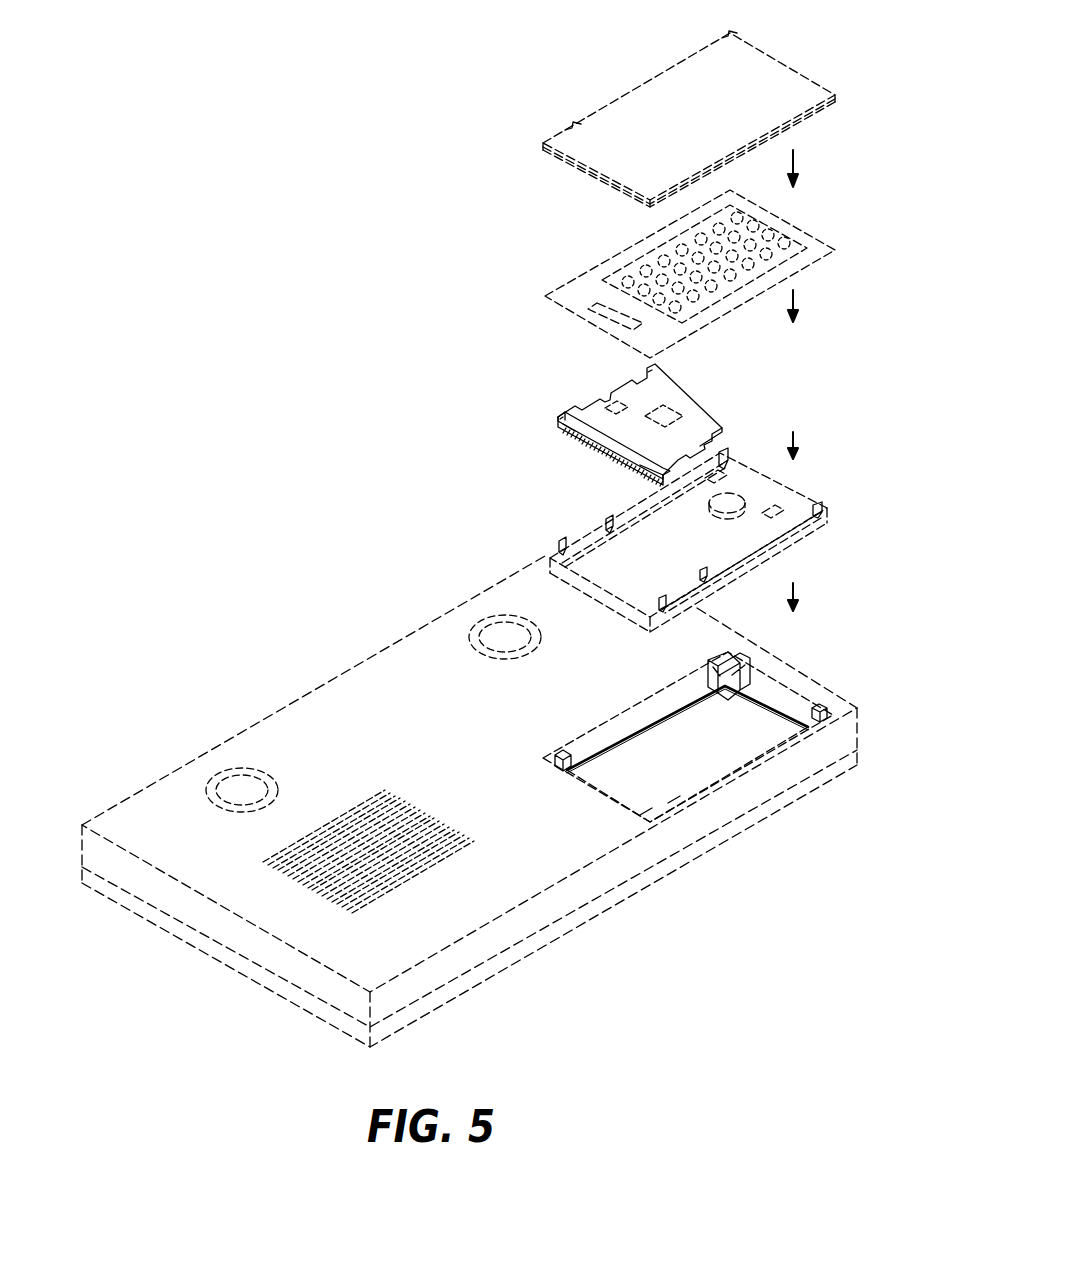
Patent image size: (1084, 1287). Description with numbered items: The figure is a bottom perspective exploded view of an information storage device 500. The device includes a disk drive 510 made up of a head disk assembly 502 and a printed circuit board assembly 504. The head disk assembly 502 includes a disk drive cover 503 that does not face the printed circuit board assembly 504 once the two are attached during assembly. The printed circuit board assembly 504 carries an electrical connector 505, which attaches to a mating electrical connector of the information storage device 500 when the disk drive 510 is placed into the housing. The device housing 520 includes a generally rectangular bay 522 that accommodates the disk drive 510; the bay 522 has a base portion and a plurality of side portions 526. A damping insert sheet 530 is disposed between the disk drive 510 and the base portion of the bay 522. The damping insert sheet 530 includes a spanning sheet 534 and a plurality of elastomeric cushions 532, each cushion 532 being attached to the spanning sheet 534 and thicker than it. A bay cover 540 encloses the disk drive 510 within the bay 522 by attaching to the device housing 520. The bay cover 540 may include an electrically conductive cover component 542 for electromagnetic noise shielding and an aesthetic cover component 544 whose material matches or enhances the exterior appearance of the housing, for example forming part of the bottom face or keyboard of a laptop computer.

The information storage device 500 is at (208, 157).
The bay cover 540 is at (401, 100).
The aesthetic cover component 544 is at (586, 118).
The electrically conductive cover component 542 is at (587, 273).
The disk drive 510 is at (401, 398).
The printed circuit board assembly 504 is at (690, 422).
The electrical connector 505 is at (598, 468).
The head disk assembly 502 is at (590, 514).
The disk drive cover 503 is at (800, 550).
The device housing 520 is at (302, 700).
The damping insert sheet 530 is at (715, 750).
The generally rectangular bay 522 is at (618, 726).
The spanning sheet 534 is at (677, 773).
The side portions 526 is at (670, 698).
The elastomeric cushions 532 is at (578, 758).